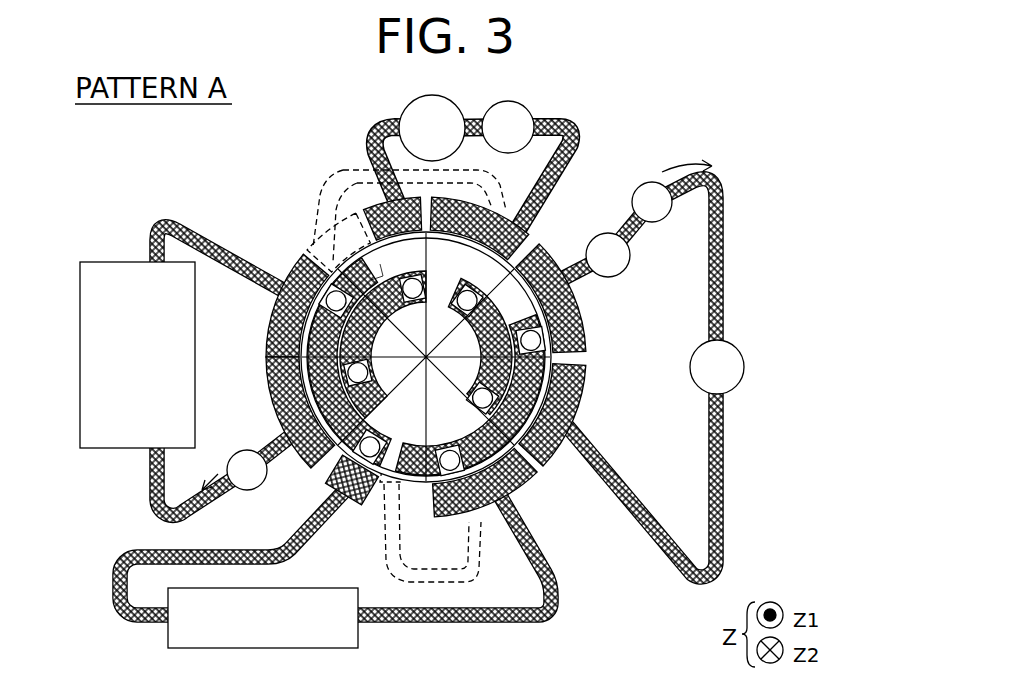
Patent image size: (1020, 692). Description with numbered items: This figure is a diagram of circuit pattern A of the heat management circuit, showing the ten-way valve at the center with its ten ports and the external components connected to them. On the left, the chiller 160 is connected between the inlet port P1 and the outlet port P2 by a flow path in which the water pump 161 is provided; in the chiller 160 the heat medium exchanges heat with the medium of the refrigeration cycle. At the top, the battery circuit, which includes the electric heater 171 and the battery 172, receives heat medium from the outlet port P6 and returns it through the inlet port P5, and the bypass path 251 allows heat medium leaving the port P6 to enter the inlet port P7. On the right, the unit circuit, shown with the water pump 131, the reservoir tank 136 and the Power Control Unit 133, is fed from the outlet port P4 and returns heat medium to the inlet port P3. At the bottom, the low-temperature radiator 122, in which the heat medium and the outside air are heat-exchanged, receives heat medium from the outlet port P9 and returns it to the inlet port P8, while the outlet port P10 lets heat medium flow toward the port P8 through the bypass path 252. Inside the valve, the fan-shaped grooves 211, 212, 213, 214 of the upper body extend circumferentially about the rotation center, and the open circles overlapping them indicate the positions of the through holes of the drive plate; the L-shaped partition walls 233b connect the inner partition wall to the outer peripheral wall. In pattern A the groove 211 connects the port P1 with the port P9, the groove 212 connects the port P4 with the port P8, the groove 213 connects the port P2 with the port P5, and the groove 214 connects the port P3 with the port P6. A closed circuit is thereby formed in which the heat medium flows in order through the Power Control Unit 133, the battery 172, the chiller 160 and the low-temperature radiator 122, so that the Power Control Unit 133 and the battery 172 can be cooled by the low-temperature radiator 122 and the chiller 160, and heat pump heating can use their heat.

The low-temperature radiator 122 is at (270, 650).
The water pump 131 is at (652, 182).
The Power Control Unit 133 is at (737, 347).
The reservoir tank 136 is at (612, 277).
The chiller 160 is at (135, 261).
The water pump 161 is at (247, 450).
The electric heater 171 is at (513, 101).
The battery 172 is at (432, 94).
The groove 211 is at (322, 282).
The groove 212 is at (530, 397).
The groove 213 is at (360, 341).
The groove 214 is at (487, 323).
The partition wall 233b is at (384, 272).
The bypass path 251 is at (478, 176).
The bypass path 252 is at (452, 582).
The port P1 is at (270, 317).
The port P2 is at (272, 404).
The port P3 is at (587, 392).
The port P4 is at (582, 346).
The port P5 is at (368, 228).
The port P6 is at (521, 233).
The port P7 is at (336, 238).
The port P8 is at (530, 487).
The port P9 is at (341, 494).
The port P10 is at (393, 492).